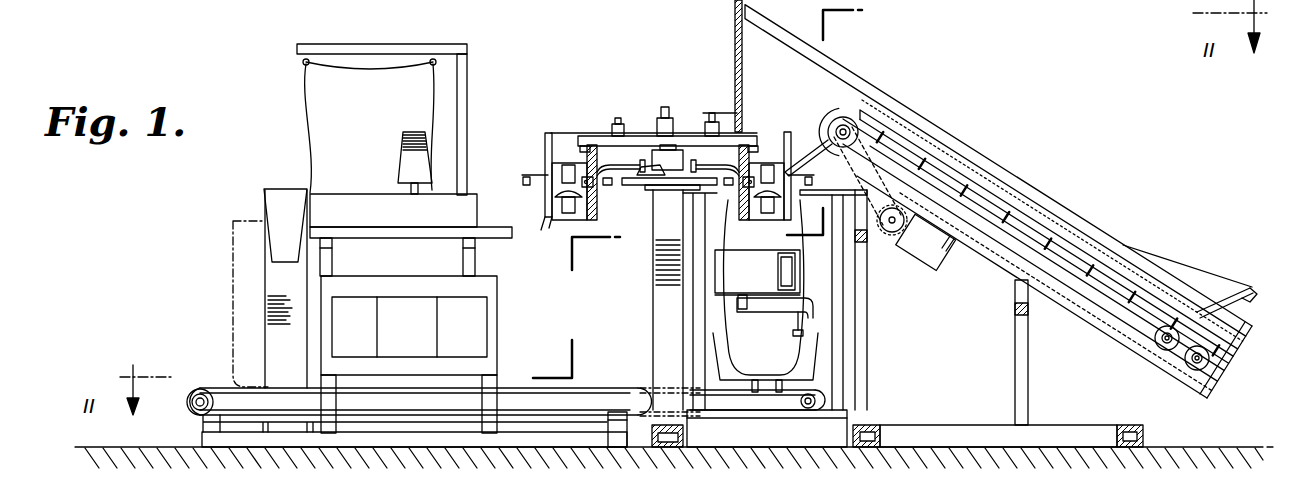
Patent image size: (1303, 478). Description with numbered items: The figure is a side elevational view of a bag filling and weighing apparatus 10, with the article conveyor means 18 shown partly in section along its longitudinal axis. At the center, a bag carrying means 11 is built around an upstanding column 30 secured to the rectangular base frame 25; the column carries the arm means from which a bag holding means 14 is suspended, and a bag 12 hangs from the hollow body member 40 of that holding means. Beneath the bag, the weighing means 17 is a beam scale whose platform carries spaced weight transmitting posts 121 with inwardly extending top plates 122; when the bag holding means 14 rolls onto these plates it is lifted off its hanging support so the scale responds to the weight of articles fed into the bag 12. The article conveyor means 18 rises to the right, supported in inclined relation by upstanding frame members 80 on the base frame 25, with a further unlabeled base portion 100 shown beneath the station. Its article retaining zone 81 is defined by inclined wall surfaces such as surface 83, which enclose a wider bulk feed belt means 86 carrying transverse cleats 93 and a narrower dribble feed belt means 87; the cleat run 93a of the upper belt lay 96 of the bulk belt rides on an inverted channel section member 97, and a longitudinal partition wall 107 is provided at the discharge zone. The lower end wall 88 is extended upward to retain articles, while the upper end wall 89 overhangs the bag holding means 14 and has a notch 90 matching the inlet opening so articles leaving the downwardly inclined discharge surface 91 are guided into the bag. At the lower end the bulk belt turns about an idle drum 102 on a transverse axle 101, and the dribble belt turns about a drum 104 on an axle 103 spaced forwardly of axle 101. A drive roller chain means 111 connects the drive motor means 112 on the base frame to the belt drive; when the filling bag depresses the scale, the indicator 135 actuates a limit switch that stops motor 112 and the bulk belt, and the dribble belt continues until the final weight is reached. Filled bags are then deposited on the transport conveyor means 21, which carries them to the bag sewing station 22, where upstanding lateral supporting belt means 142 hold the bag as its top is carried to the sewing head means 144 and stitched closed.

The bag filling and weighing apparatus 10 is at (968, 75).
The bag carrying means 11 is at (593, 114).
The bag 12 is at (800, 285).
The bag holding means 14 is at (538, 170).
The weighing means 17 is at (818, 363).
The article conveyor means 18 is at (1030, 187).
The filled bag transport conveyor means 21 is at (587, 387).
The bag sewing station 22 is at (268, 183).
The base frame 25 is at (1005, 420).
The column 30 is at (660, 295).
The body member 40 is at (545, 215).
The frame members 80 is at (870, 405).
The article retaining zone 81 is at (1193, 287).
The inclined surface 83 is at (855, 80).
The bulk feed belt means 86 is at (1147, 283).
The dribble feed belt means 87 is at (1057, 233).
The lower end wall 88 is at (1247, 296).
The upper end wall 89 is at (736, 40).
The notch 90 is at (752, 134).
The discharge surface 91 is at (812, 130).
The cleats 93 is at (1107, 334).
The upper chain run 93a is at (990, 185).
The upper belt lay 96 is at (230, 440).
The inverted channel section member 97 is at (1010, 238).
The base block 100 is at (833, 415).
The transverse axle 101 is at (1212, 372).
The drum 102 is at (1197, 368).
The axle 103 is at (1162, 348).
The drum 104 is at (1150, 342).
The longitudinal partition wall 107 is at (900, 125).
The drive roller chain means 111 is at (876, 226).
The drive motor means 112 is at (933, 258).
The weight transmitting posts 121 is at (690, 332).
The top plates 122 is at (717, 195).
The indicator 135 is at (750, 331).
The lateral supporting belt means 142 is at (473, 318).
The sewing head means 144 is at (273, 203).